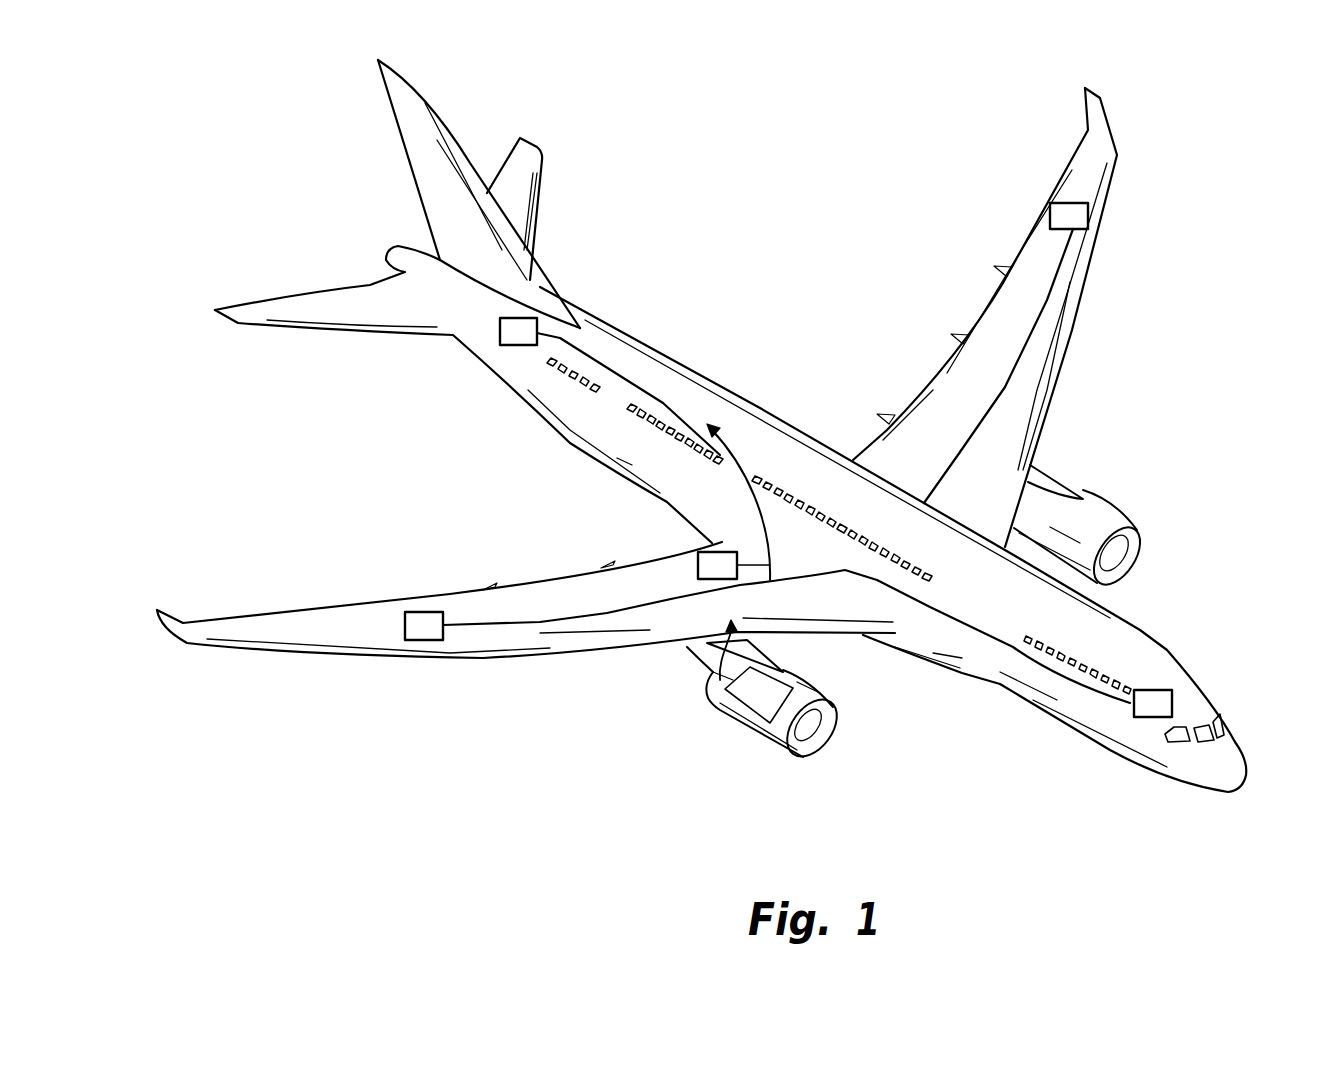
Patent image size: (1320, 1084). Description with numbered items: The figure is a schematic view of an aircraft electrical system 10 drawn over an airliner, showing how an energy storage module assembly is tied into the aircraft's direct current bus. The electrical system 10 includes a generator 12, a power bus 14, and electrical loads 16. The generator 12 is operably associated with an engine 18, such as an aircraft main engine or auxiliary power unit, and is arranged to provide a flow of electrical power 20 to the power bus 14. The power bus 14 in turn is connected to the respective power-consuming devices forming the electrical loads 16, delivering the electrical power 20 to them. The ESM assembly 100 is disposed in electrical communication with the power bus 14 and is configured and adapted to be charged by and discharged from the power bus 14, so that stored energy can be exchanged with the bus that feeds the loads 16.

The electrical system 10 is at (549, 764).
The generator 12 is at (767, 707).
The power bus 14 is at (660, 405).
The electrical loads 16 is at (518, 328).
The engine 18 is at (720, 717).
The flow of electrical power 20 is at (728, 437).
The ESM assembly 100 is at (697, 556).